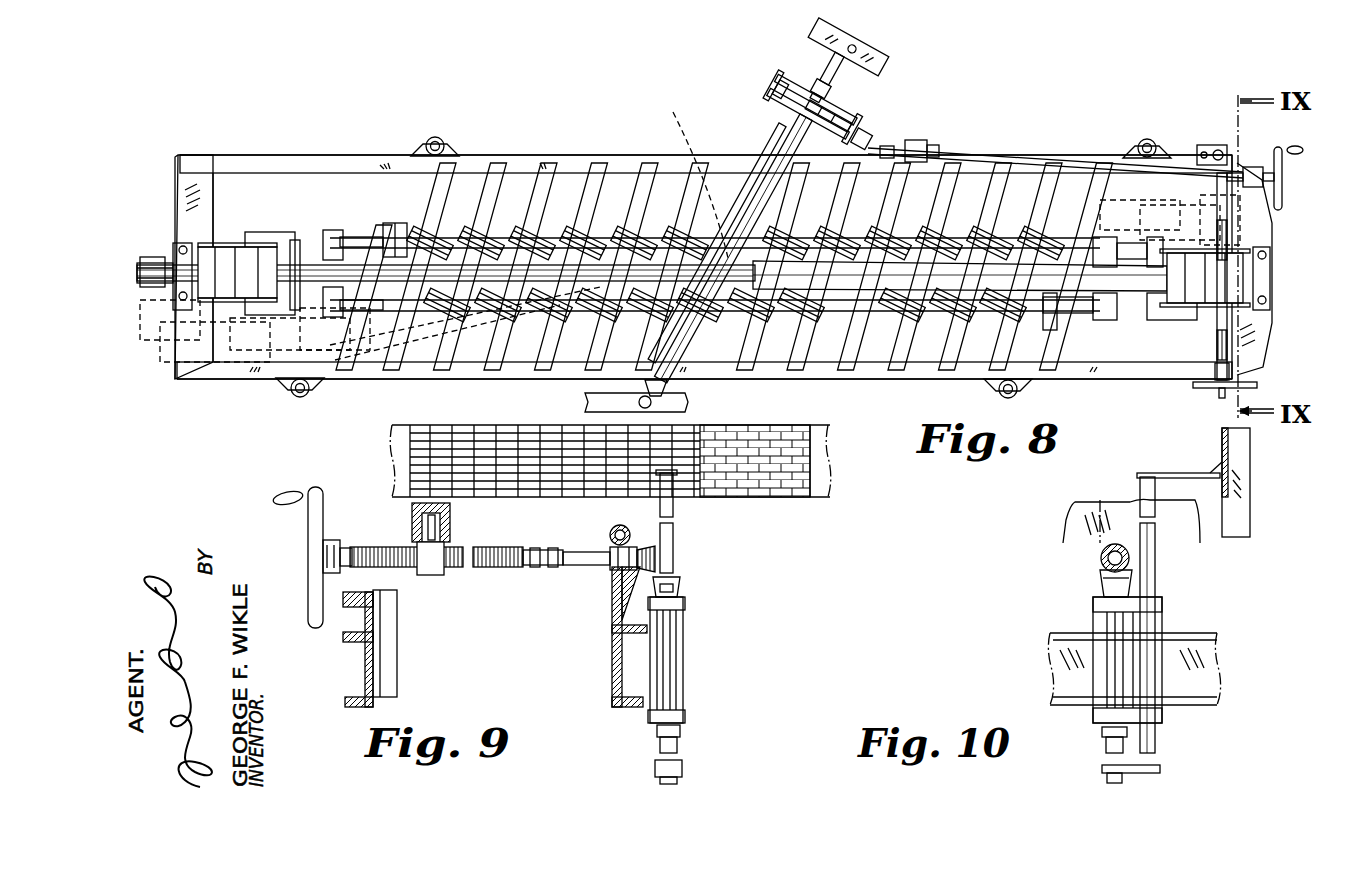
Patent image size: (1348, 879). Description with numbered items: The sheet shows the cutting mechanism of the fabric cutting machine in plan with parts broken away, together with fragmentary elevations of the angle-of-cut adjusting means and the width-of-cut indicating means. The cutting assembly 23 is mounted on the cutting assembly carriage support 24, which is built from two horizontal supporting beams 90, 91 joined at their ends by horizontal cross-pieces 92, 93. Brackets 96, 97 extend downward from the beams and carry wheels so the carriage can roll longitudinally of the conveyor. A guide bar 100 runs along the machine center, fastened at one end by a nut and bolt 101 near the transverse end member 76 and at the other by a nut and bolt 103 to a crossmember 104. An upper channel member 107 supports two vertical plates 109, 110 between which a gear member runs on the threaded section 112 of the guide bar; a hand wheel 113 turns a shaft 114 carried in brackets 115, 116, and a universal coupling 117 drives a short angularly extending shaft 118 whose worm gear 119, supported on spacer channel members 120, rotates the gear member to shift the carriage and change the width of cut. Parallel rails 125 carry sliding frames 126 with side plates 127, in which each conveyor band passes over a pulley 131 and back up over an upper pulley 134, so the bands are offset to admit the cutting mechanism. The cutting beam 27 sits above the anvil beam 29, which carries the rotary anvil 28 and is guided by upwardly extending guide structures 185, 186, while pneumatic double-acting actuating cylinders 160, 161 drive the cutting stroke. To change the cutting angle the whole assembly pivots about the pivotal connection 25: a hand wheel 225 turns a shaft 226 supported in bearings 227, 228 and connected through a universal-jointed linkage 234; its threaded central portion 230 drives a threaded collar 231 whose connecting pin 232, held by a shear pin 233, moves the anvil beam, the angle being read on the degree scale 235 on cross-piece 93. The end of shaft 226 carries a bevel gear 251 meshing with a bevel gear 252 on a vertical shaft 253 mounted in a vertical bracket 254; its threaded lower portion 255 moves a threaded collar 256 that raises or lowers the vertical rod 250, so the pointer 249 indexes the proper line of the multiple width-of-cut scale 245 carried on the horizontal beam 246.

In FIG. 8, the cutting assembly 23 is at (273, 228).
In FIG. 8, the cutting assembly carriage support 24 is at (342, 148).
In FIG. 8, the pivotal connection 25 is at (697, 182).
In FIG. 8, the cutting beam 27 is at (1070, 280).
In FIG. 8, the rotary anvil 28 is at (608, 163).
In FIG. 9, the anvil beam 29 is at (410, 518).
In FIG. 8, the transverse end member 76 is at (688, 402).
In FIG. 8, the horizontal supporting beam 90 is at (234, 378).
In FIG. 9, the horizontal supporting beam 90 is at (355, 706).
In FIG. 8, the horizontal supporting beam 91 is at (222, 163).
In FIG. 9, the horizontal supporting beam 91 is at (625, 706).
In FIG. 8, the horizontal cross-piece 92 is at (178, 196).
In FIG. 8, the horizontal cross-piece 93 is at (1262, 348).
In FIG. 8, the downwardly extending bracket 96 is at (318, 384).
In FIG. 8, the downwardly extending bracket 97 is at (446, 156).
In FIG. 8, the guide bar 100 is at (848, 66).
In FIG. 8, the nut and bolt 101 is at (645, 390).
In FIG. 8, the nut and bolt 103 is at (861, 43).
In FIG. 8, the crossmember 104 is at (893, 58).
In FIG. 8, the upper channel member 107 is at (707, 352).
In FIG. 8, the vertical plate 109 is at (771, 122).
In FIG. 8, the vertical plate 110 is at (782, 87).
In FIG. 8, the threaded section 112 is at (846, 78).
In FIG. 8, the hand wheel 113 is at (1280, 198).
In FIG. 8, the shaft 114 is at (988, 153).
In FIG. 9, the shaft 114 is at (612, 532).
In FIG. 8, the bracket 115 is at (1254, 165).
In FIG. 8, the bracket 116 is at (930, 146).
In FIG. 8, the universal coupling 117 is at (842, 182).
In FIG. 8, the short angularly extending shaft 118 is at (796, 96).
In FIG. 8, the worm gear 119 is at (823, 121).
In FIG. 8, the spacer channel member 120 is at (762, 108).
In FIG. 8, the rail 125 is at (850, 372).
In FIG. 8, the sliding frame 126 is at (838, 322).
In FIG. 8, the side plate 127 is at (955, 315).
In FIG. 8, the pulley 131 is at (845, 243).
In FIG. 8, the upper pulley 134 is at (612, 313).
In FIG. 8, the pneumatic double-acting actuating cylinder 160 is at (403, 222).
In FIG. 8, the pneumatic double-acting actuating cylinder 161 is at (1036, 322).
In FIG. 8, the guide structure 185 is at (234, 244).
In FIG. 8, the guide structure 186 is at (1205, 312).
In FIG. 8, the hand wheel 225 is at (1250, 388).
In FIG. 9, the hand wheel 225 is at (306, 530).
In FIG. 8, the shaft 226 is at (1228, 314).
In FIG. 9, the shaft 226 is at (357, 553).
In FIG. 8, the bearing 227 is at (1214, 376).
In FIG. 9, the bearing 228 is at (615, 572).
In FIG. 9, the threaded central portion 230 is at (490, 570).
In FIG. 9, the threaded collar 231 is at (430, 578).
In FIG. 9, the connecting pin 232 is at (452, 540).
In FIG. 9, the shear pin 233 is at (447, 518).
In FIG. 8, the linkage 234 is at (1216, 168).
In FIG. 9, the linkage 234 is at (537, 570).
In FIG. 8, the degree scale 235 is at (1270, 268).
In FIG. 9, the multiple width-of-cut scale 245 is at (812, 497).
In FIG. 10, the multiple width-of-cut scale 245 is at (1248, 512).
In FIG. 10, the horizontal beam 246 is at (1240, 440).
In FIG. 9, the pointer 249 is at (680, 478).
In FIG. 10, the pointer 249 is at (1187, 474).
In FIG. 9, the vertical rod 250 is at (675, 540).
In FIG. 10, the vertical rod 250 is at (1151, 556).
In FIG. 9, the bevel gear 251 is at (662, 566).
In FIG. 10, the bevel gear 251 is at (1100, 560).
In FIG. 9, the bevel gear 252 is at (683, 583).
In FIG. 10, the bevel gear 252 is at (1100, 580).
In FIG. 9, the vertical shaft 253 is at (672, 632).
In FIG. 10, the vertical shaft 253 is at (1103, 630).
In FIG. 9, the vertical bracket 254 is at (683, 670).
In FIG. 10, the vertical bracket 254 is at (1098, 716).
In FIG. 9, the threaded lower portion 255 is at (681, 738).
In FIG. 10, the threaded lower portion 255 is at (1108, 742).
In FIG. 9, the threaded collar 256 is at (681, 768).
In FIG. 10, the threaded collar 256 is at (1148, 773).